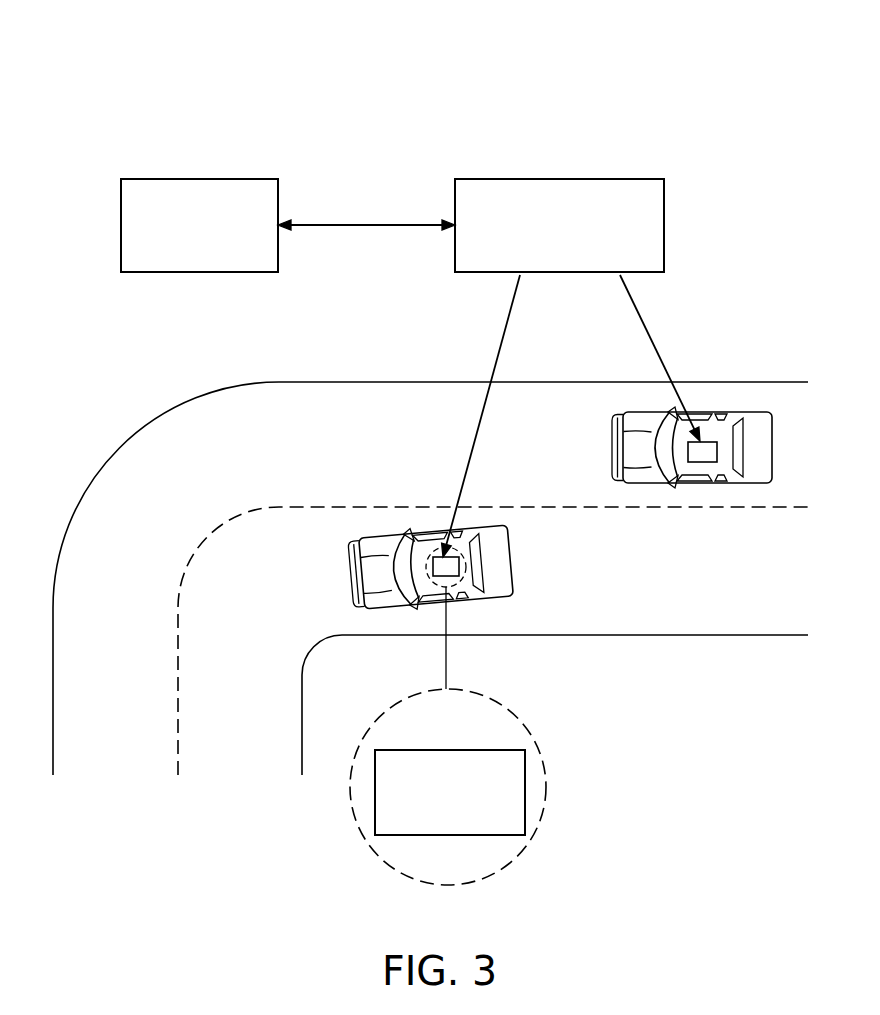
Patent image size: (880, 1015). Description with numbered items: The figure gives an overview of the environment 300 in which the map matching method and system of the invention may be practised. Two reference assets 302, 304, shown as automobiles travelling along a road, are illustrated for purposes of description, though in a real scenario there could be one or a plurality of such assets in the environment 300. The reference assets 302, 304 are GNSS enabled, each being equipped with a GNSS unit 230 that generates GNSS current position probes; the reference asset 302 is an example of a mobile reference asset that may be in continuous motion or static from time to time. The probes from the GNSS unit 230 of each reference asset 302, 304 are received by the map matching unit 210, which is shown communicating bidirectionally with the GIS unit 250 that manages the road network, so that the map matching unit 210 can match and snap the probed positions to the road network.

The environment 300 is at (658, 105).
The geographical interaction system (GIS) unit 250 is at (214, 255).
The map matching unit 210 is at (581, 257).
The global navigation satellite system (GNSS) unit 230 is at (465, 818).
The reference asset 302 is at (498, 601).
The reference asset 304 is at (707, 412).